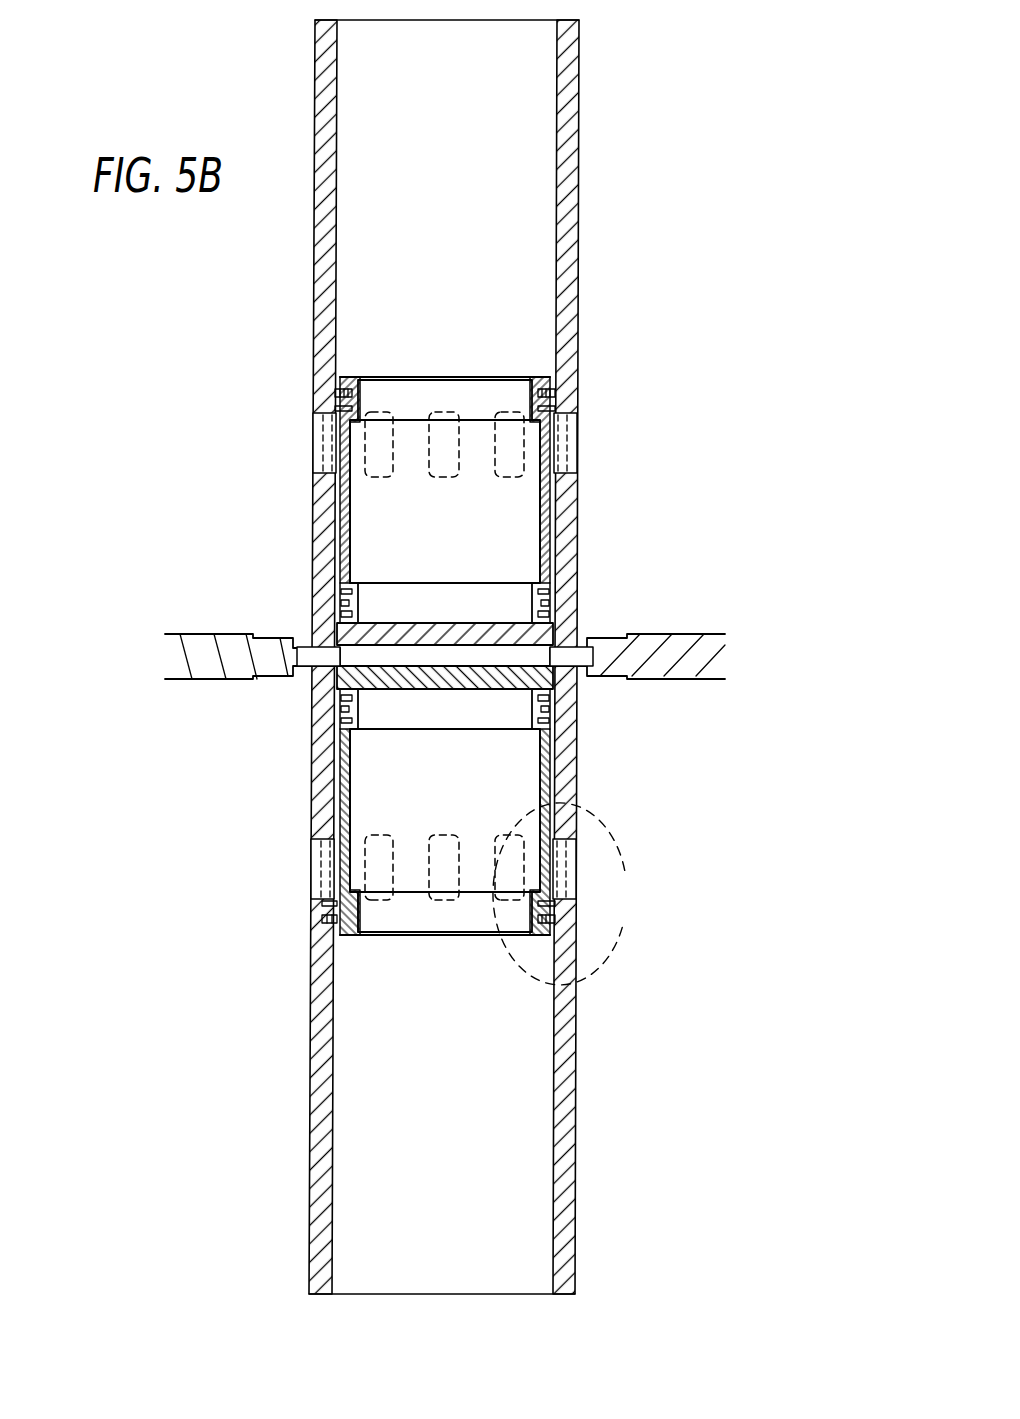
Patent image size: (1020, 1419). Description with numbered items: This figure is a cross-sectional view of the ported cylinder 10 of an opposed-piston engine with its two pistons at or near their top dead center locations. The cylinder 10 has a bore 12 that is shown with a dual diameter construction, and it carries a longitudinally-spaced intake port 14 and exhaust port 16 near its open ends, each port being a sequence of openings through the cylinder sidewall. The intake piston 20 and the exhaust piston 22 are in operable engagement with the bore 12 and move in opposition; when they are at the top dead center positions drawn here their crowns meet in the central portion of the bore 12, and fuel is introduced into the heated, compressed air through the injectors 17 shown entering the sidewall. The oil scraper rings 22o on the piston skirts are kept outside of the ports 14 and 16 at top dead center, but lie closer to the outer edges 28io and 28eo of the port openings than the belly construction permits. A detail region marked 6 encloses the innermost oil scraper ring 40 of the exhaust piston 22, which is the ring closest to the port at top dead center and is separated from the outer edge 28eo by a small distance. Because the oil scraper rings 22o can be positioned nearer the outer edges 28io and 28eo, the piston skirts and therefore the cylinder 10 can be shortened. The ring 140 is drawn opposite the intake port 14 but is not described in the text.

The ported cylinder 10 is at (580, 132).
The bore 12 is at (461, 113).
The intake port 14 is at (590, 448).
The inner ring 140 is at (313, 447).
The exhaust port 16 is at (270, 866).
The injector 17 is at (205, 655).
The intake piston 20 is at (428, 372).
The exhaust piston 22 is at (430, 950).
The oil scraper ring 22o is at (322, 913).
The outer edge of intake port opening 28io is at (573, 428).
The outer edge of exhaust port opening 28eo is at (328, 898).
The innermost oil scraper ring 40 is at (340, 907).
The detail circle 6 is at (628, 858).